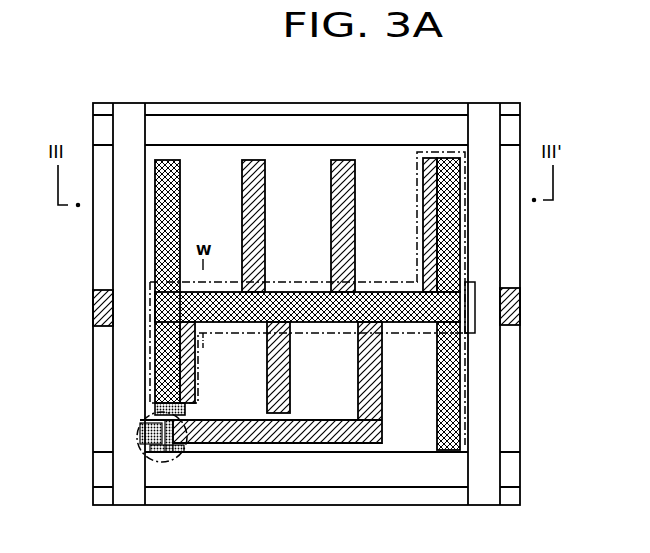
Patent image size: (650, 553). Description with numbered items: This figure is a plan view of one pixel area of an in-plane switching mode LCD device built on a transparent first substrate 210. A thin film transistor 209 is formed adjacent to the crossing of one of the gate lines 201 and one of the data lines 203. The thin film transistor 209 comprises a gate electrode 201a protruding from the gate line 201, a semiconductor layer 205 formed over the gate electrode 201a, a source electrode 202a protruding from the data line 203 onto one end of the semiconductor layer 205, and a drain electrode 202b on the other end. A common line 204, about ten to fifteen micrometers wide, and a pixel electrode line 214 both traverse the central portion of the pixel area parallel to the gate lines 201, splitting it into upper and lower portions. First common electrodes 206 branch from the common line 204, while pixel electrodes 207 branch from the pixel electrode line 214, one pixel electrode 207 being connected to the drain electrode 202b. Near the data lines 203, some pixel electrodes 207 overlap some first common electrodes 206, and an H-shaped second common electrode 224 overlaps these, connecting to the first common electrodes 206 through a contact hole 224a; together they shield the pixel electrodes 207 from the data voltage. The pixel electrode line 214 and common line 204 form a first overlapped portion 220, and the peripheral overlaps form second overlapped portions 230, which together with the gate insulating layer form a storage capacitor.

The gate line 201 is at (512, 118).
The gate electrode 201a is at (152, 410).
The source electrode 202a is at (140, 424).
The drain electrode 202b is at (181, 452).
The data line 203 is at (120, 341).
The common line 204 is at (93, 303).
The semiconductor layer 205 is at (165, 452).
The first common electrode 206 is at (340, 160).
The pixel electrode 207 is at (254, 160).
The thin film transistor 209 is at (133, 447).
The first substrate 210 is at (540, 112).
The pixel electrode line 214 is at (470, 326).
The first overlapped portion 220 is at (474, 289).
The second common electrode 224 is at (462, 225).
The contact hole 224a is at (460, 426).
The second overlapped portion 230 is at (441, 158).